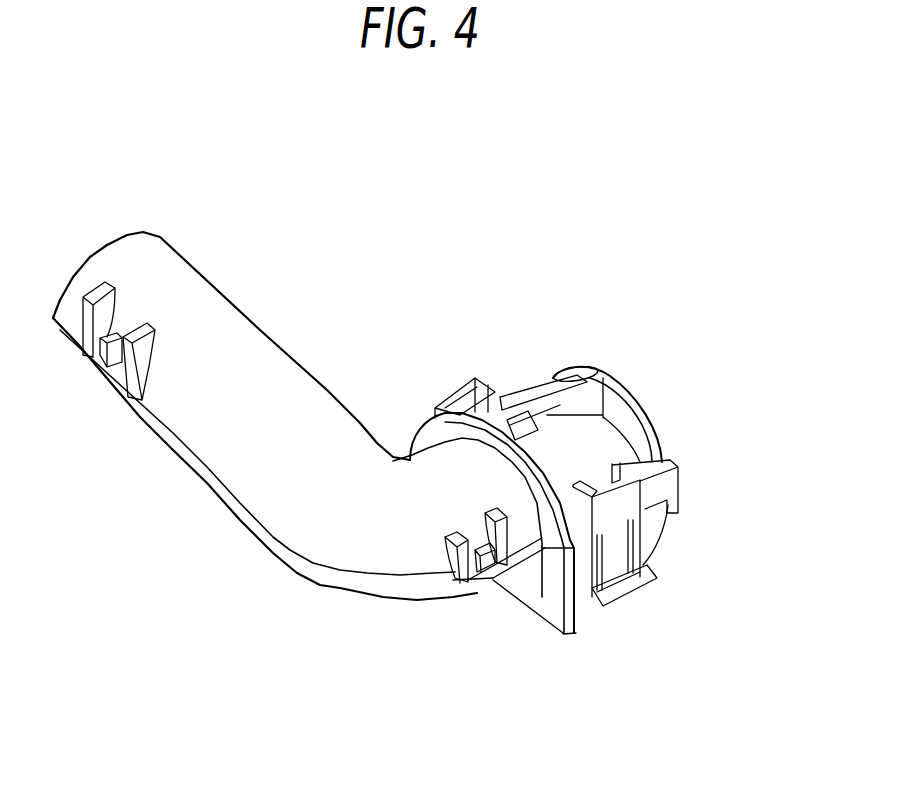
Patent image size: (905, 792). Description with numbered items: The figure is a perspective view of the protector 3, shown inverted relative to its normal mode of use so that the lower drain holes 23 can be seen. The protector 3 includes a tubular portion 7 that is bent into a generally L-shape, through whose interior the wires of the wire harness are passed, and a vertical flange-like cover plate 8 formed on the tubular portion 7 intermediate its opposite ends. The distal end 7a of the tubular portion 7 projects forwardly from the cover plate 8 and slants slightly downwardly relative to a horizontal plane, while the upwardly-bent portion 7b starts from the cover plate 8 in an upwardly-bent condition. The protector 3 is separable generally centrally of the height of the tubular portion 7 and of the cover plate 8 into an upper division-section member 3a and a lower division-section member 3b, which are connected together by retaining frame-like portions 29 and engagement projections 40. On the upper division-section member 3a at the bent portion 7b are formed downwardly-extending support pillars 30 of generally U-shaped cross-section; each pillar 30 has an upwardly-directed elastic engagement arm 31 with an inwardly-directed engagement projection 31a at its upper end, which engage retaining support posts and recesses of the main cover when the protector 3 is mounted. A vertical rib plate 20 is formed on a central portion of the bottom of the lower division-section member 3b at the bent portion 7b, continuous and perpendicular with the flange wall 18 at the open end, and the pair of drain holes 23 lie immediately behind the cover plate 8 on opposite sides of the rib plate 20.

The protector 3 is at (794, 319).
The upper division-section member 3a is at (212, 485).
The lower division-section member 3b is at (220, 312).
The tubular portion 7 is at (280, 352).
The distal end 7a is at (114, 240).
The upwardly-bent portion 7b is at (590, 432).
The cover plate 8 is at (427, 430).
The flange wall 18 is at (653, 427).
The vertical rib plate 20 is at (580, 378).
The drain hole 23 is at (527, 392).
The retaining frame-like portion 29 is at (490, 582).
The support pillar 30 is at (613, 502).
The elastic engagement arm 31 is at (613, 556).
The engagement projection 31a is at (585, 535).
The engagement projection 40 is at (486, 590).